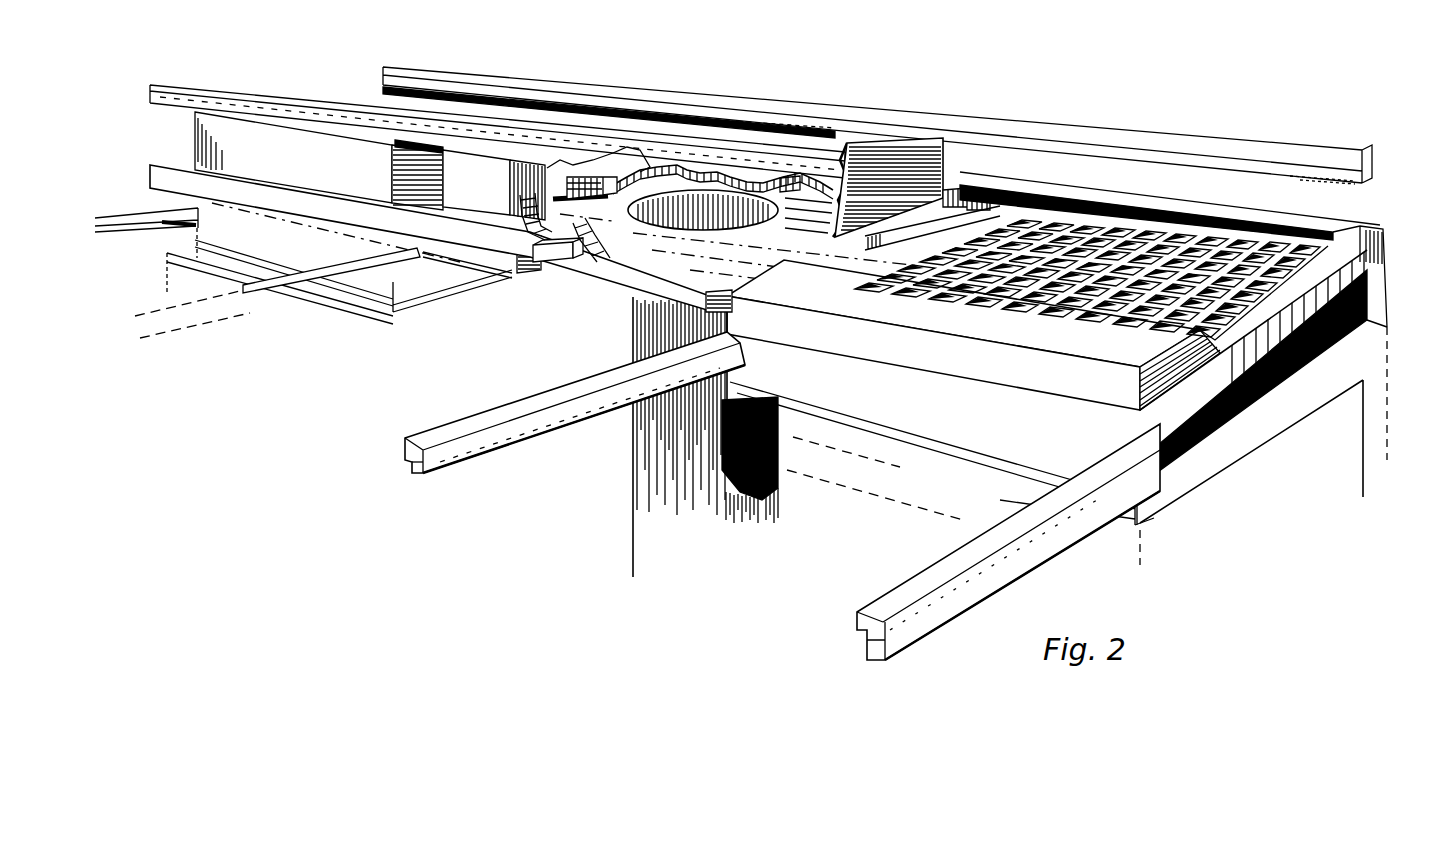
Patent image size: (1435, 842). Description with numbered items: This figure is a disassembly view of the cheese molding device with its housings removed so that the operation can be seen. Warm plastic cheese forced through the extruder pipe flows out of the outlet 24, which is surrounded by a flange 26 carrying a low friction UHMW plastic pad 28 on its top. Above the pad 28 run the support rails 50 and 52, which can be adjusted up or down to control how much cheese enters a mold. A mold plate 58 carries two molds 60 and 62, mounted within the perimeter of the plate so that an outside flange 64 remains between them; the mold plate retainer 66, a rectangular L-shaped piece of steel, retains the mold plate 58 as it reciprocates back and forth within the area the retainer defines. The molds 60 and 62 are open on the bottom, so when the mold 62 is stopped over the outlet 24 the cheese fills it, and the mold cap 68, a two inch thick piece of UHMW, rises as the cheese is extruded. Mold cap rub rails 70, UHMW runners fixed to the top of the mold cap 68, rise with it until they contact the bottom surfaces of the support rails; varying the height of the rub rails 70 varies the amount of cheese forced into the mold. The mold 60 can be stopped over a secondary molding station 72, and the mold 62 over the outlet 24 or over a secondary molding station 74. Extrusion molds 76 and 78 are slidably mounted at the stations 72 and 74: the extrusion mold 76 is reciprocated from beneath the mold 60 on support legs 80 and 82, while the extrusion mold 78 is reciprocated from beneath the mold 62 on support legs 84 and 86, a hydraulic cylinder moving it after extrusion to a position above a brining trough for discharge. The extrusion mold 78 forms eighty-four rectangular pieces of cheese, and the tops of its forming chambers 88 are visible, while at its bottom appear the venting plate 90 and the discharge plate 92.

The outlet 24 is at (728, 177).
The flange 26 is at (577, 278).
The UHMW plastic pad 28 is at (582, 373).
The support rail 50 is at (200, 97).
The support rail 52 is at (455, 76).
The mold plate 58 is at (393, 190).
The mold 60 is at (392, 110).
The mold 62 is at (683, 160).
The outside flange 64 is at (952, 190).
The mold plate retainer 66 is at (1022, 187).
The mold cap 68 is at (761, 167).
The mold cap rub rails 70 is at (598, 177).
The secondary molding station 72 is at (235, 235).
The secondary molding station 74 is at (1098, 417).
The extrusion mold 76 is at (252, 243).
The extrusion mold 78 is at (1070, 437).
The support leg 80 is at (121, 230).
The support leg 82 is at (243, 305).
The support leg 84 is at (413, 437).
The support leg 86 is at (1032, 540).
The forming chambers 88 is at (1073, 260).
The venting plate 90 is at (1253, 447).
The discharge plate 92 is at (1193, 467).